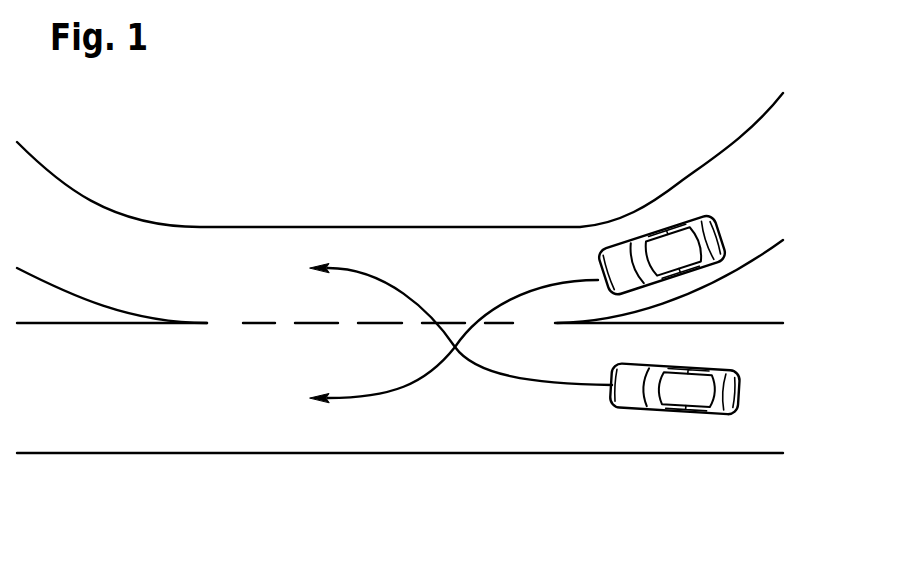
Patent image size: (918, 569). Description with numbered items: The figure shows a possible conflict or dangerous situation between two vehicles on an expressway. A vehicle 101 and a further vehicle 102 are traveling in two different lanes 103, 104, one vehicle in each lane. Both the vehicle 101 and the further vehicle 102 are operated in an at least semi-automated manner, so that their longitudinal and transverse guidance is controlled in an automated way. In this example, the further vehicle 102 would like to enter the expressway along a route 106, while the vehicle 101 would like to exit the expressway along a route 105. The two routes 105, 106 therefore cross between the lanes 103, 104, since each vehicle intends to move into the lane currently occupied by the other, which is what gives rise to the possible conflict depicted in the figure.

The vehicle 101 is at (720, 393).
The further vehicle 102 is at (717, 237).
The lane 103 is at (205, 432).
The lane 104 is at (250, 257).
The route 105 is at (522, 372).
The route 106 is at (525, 283).